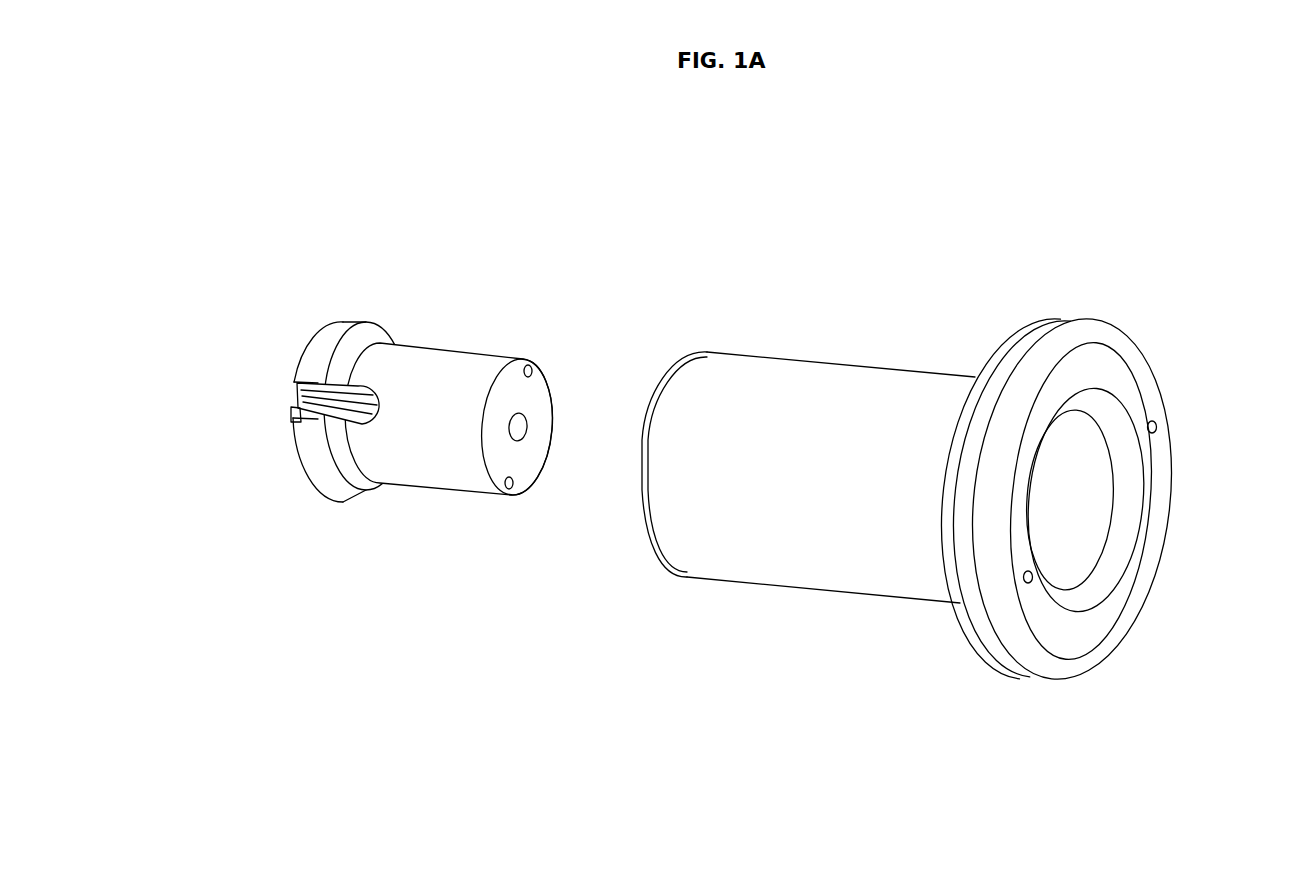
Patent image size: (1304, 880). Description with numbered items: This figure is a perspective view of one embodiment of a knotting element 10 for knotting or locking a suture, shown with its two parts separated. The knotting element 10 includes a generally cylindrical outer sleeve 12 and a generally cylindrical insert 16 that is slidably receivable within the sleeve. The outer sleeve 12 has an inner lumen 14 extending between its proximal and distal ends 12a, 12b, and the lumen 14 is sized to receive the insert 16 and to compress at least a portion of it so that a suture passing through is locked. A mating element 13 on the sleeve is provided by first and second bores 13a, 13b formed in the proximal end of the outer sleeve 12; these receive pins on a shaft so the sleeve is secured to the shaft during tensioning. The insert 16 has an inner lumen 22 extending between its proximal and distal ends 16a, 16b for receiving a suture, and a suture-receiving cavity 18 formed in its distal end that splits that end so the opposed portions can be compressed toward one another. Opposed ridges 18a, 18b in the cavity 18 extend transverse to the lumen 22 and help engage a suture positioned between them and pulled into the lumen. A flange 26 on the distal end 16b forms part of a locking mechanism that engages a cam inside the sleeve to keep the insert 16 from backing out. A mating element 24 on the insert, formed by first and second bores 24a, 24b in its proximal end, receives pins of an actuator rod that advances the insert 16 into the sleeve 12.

The knotting element 10 is at (336, 175).
The outer sleeve 12 is at (962, 493).
The proximal end of the outer sleeve 12a is at (1205, 498).
The distal end of the outer sleeve 12b is at (661, 602).
The mating element 13 is at (1110, 528).
The first bore 13a is at (1160, 425).
The second bore 13b is at (1028, 585).
The inner lumen 14 is at (1062, 515).
The insert 16 is at (406, 410).
The proximal end of the insert 16a is at (564, 338).
The distal end of the insert 16b is at (293, 325).
The suture-receiving cavity 18 is at (278, 479).
The ridge 18a is at (297, 385).
The ridge 18b is at (303, 404).
The inner lumen 22 is at (528, 421).
The mating element 24 is at (494, 527).
The first bore 24a is at (525, 365).
The second bore 24b is at (514, 488).
The flange 26 is at (320, 380).